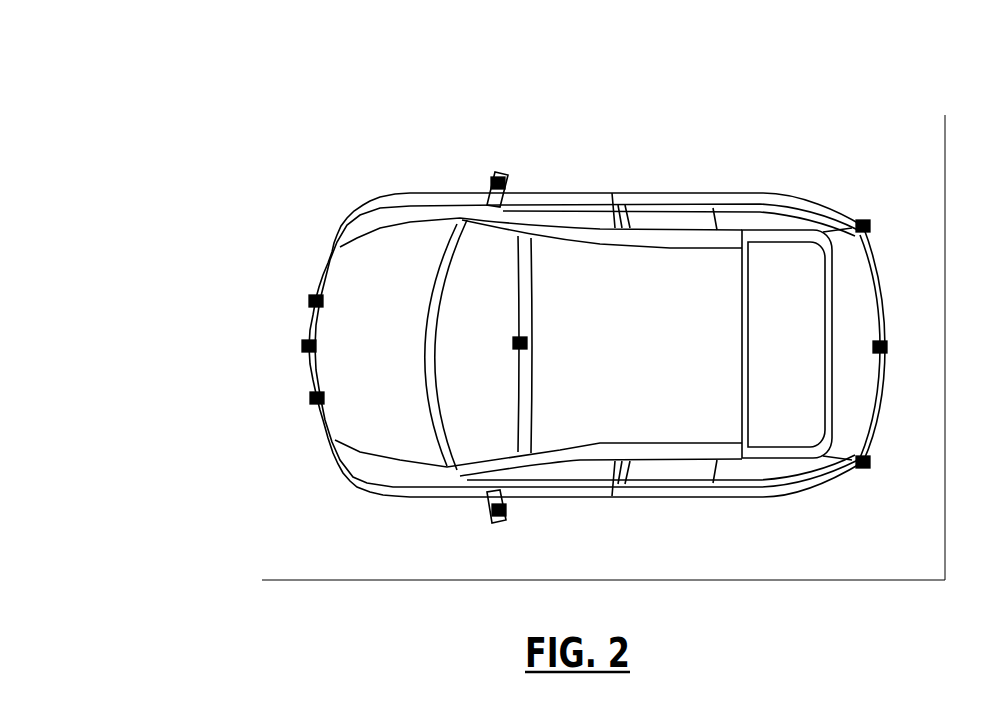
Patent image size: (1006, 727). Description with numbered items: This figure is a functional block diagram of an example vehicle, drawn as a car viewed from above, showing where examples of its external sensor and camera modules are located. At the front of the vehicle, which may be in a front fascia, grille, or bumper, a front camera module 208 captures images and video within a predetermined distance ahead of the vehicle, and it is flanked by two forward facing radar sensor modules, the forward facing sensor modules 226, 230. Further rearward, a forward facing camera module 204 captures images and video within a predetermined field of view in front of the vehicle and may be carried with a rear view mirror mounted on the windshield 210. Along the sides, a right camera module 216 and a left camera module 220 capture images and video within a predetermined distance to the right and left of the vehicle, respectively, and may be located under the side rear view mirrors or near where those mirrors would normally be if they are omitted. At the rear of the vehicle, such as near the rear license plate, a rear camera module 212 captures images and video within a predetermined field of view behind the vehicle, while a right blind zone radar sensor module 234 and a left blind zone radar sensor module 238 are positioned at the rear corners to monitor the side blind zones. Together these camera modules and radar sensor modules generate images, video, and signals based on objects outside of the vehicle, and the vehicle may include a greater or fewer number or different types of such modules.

The windshield 210 is at (480, 317).
The forward facing camera module 204 is at (527, 347).
The front camera module 208 is at (302, 346).
The rear camera module 212 is at (888, 346).
The right camera module 216 is at (498, 177).
The left camera module 220 is at (500, 506).
The forward facing sensor module 226 is at (310, 299).
The forward facing sensor module 230 is at (310, 398).
The right blind zone radar sensor module 234 is at (870, 224).
The left blind zone radar sensor module 238 is at (870, 468).